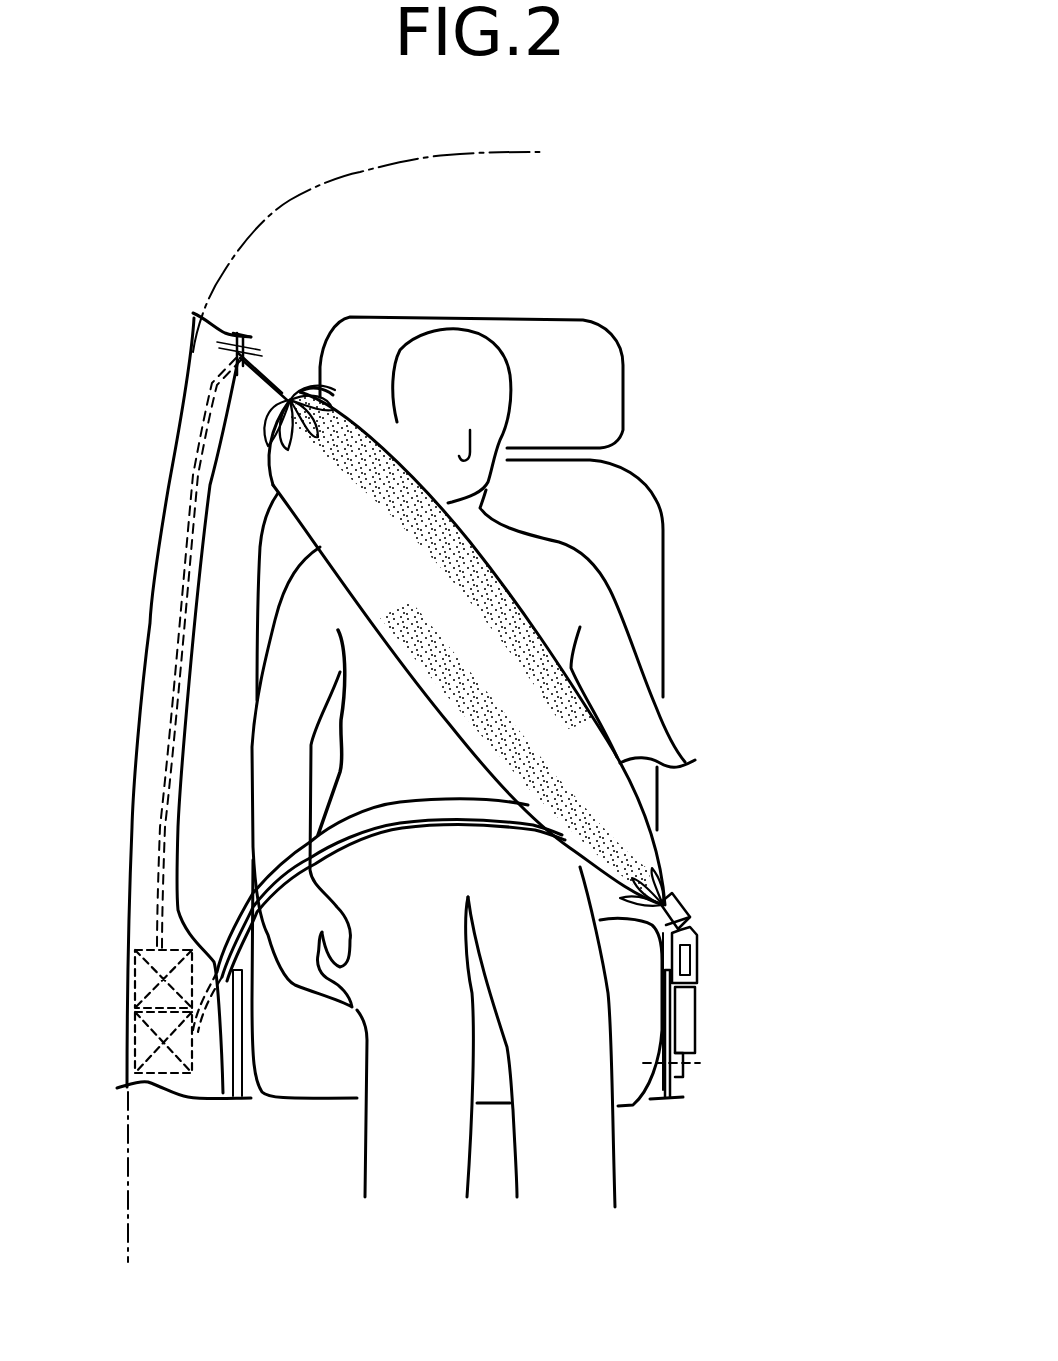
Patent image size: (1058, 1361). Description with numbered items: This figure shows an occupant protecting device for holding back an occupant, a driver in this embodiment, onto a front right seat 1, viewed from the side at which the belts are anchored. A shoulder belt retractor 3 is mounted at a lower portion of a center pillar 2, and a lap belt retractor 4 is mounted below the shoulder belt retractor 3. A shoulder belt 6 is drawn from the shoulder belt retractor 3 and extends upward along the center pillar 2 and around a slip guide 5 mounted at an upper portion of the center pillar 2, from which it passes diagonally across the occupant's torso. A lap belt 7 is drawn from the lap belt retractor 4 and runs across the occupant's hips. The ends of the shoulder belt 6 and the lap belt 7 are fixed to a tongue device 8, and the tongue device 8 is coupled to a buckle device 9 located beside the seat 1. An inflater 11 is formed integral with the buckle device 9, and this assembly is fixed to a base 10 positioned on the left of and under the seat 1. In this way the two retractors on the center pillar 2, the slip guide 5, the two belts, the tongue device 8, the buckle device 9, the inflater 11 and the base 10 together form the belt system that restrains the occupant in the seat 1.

The front right seat 1 is at (664, 591).
The center pillar 2 is at (153, 623).
The shoulder belt retractor 3 is at (133, 965).
The lap belt retractor 4 is at (135, 1055).
The slip guide 5 is at (234, 378).
The shoulder belt 6 is at (412, 664).
The lap belt 7 is at (403, 818).
The tongue device 8 is at (687, 921).
The buckle device 9 is at (699, 953).
The base 10 is at (677, 1080).
The inflater 11 is at (698, 1010).